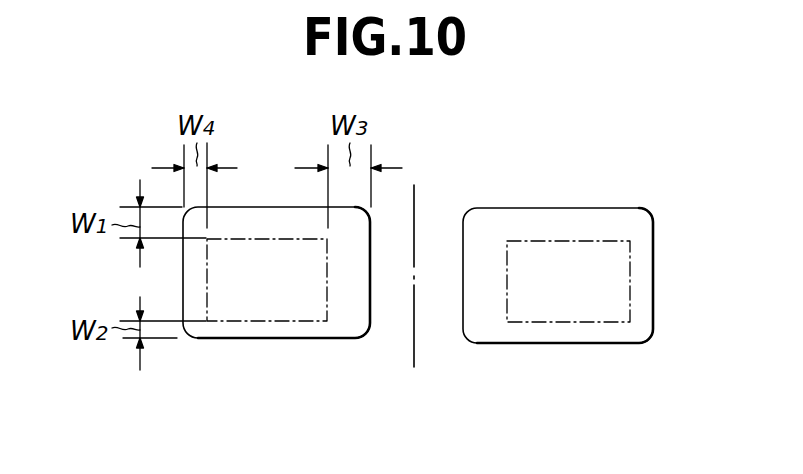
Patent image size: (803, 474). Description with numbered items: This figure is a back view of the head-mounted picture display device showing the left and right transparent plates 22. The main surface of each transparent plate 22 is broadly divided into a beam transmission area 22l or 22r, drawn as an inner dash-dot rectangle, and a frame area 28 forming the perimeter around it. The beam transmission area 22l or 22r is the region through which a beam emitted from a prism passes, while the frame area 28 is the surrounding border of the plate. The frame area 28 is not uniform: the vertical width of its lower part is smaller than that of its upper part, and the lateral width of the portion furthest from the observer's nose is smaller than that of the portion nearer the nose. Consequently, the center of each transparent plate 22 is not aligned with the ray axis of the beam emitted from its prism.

The transparent plate 22 is at (303, 340).
The frame area 28 is at (349, 315).
The beam transmission area 22l is at (223, 321).
The beam transmission area 22r is at (538, 322).